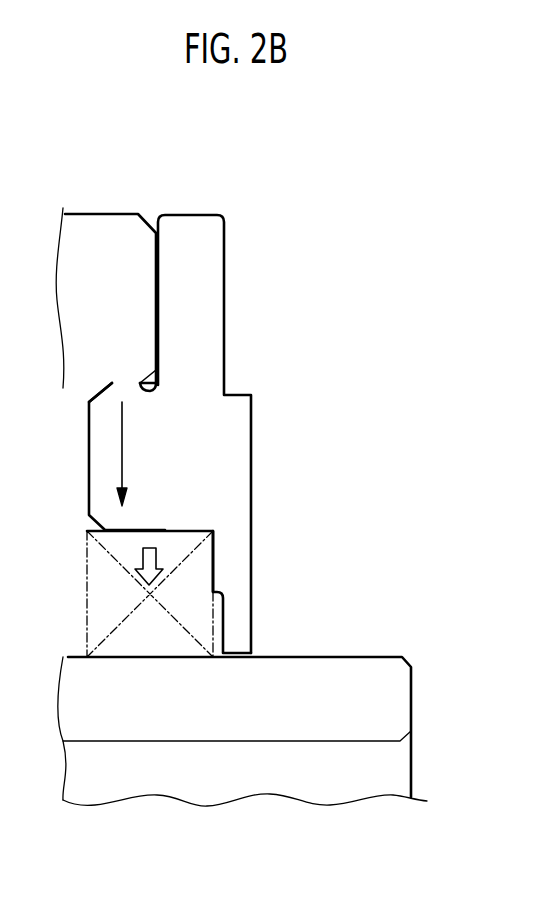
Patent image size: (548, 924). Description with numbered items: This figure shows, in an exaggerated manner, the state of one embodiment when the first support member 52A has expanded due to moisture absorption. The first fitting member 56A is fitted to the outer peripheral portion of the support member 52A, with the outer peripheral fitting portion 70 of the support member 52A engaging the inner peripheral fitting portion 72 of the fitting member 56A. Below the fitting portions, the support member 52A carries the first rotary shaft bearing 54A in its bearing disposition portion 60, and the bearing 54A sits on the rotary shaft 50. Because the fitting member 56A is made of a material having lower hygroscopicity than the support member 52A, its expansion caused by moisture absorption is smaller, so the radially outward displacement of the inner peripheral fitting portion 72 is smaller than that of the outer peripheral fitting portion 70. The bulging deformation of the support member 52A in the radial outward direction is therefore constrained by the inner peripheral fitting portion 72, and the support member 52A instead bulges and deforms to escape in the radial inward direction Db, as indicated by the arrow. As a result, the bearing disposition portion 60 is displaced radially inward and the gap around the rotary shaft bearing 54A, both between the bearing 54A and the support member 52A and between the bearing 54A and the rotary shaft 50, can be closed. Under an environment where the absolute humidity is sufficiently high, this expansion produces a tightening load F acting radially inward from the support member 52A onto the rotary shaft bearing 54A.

The rotary shaft 50 is at (335, 657).
The first support member 52A is at (253, 447).
The first rotary shaft bearing 54A is at (197, 578).
The first fitting member 56A is at (110, 214).
The bearing disposition portion 60 is at (162, 543).
The outer peripheral fitting portion 70 is at (113, 383).
The inner peripheral fitting portion 72 is at (120, 385).
The radial inward direction Db is at (122, 457).
The tightening load F is at (140, 580).